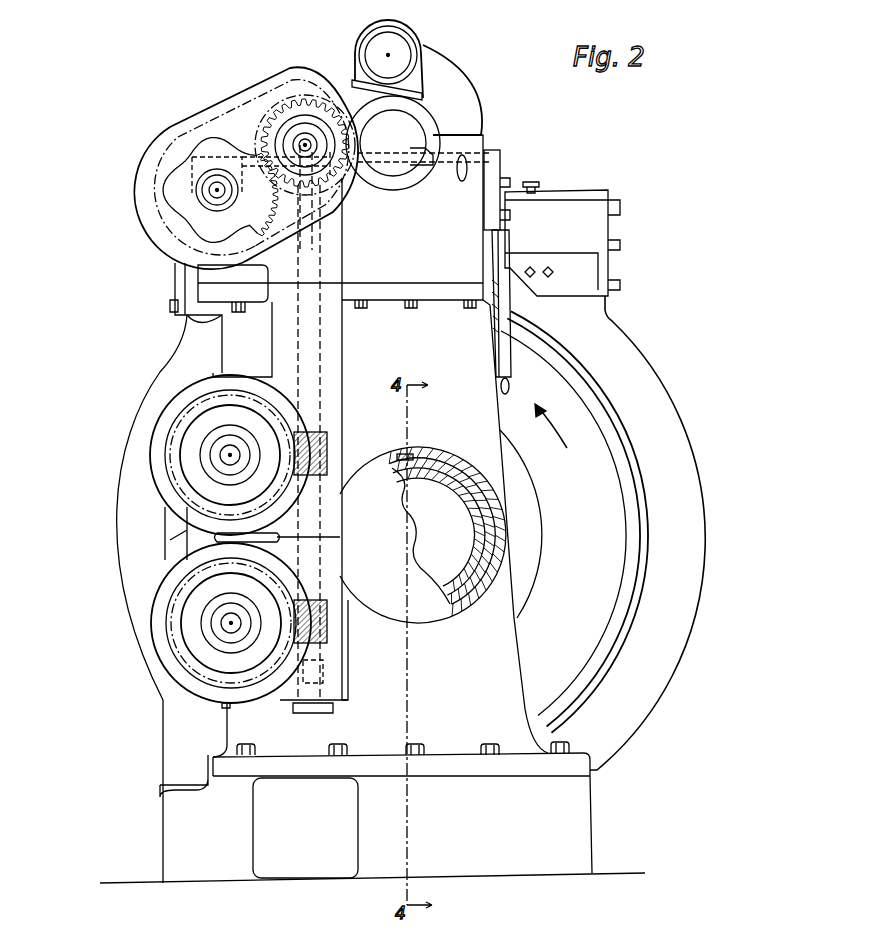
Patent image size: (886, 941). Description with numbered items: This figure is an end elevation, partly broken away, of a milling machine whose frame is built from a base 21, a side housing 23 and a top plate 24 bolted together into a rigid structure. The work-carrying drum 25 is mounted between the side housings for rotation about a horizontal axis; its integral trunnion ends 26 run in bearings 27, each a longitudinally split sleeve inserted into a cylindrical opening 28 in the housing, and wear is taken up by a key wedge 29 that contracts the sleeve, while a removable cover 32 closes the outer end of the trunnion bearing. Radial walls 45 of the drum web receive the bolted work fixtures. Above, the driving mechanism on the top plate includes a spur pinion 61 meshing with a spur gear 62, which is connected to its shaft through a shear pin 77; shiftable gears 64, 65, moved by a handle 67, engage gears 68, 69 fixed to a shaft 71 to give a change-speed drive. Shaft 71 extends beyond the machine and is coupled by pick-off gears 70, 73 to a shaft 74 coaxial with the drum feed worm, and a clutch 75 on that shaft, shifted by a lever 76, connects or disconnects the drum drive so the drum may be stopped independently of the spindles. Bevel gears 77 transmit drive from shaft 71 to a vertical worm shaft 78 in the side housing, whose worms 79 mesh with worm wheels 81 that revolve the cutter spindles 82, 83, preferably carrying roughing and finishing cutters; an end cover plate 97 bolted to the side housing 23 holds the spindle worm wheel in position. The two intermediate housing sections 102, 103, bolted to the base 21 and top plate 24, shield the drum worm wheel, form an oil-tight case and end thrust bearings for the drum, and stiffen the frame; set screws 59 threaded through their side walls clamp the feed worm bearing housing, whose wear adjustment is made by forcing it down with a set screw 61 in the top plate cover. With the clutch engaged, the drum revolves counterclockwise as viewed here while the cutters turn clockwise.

The base 21 is at (524, 870).
The side housing 23 is at (512, 642).
The top plate 24 is at (470, 193).
The work-carrying drum 25 is at (545, 505).
The trunnion ends 26 is at (465, 482).
The bearings 27 is at (437, 450).
The cylindrical opening 28 is at (488, 510).
The key wedge 29 is at (405, 454).
The cover 32 is at (428, 603).
The radial walls 45 is at (612, 547).
The set screws 59 is at (548, 268).
The set screw / motor-driven spur pinion 61 is at (405, 42).
The spur gear 62 is at (440, 88).
The gear 64 is at (423, 143).
The gear 65 is at (430, 112).
The handle 67 is at (468, 160).
The gear 68 is at (340, 190).
The gear 69 is at (310, 200).
The pick-off gear 70 is at (290, 115).
The shaft 71 is at (306, 142).
The pick-off gear 73 is at (230, 137).
The shaft 74 is at (210, 191).
The clutch 75 is at (178, 228).
The lever 76 is at (510, 346).
The bevel gears / shear pin 77 is at (262, 115).
The vertical worm shaft 78 is at (320, 355).
The worms 79 is at (335, 440).
The worm wheels 81 is at (178, 412).
The cutter spindle 82 is at (230, 455).
The cutter spindle 83 is at (231, 623).
The end cover plate 97 is at (345, 572).
The intermediate housing section 102 is at (118, 530).
The intermediate housing section 103 is at (700, 480).